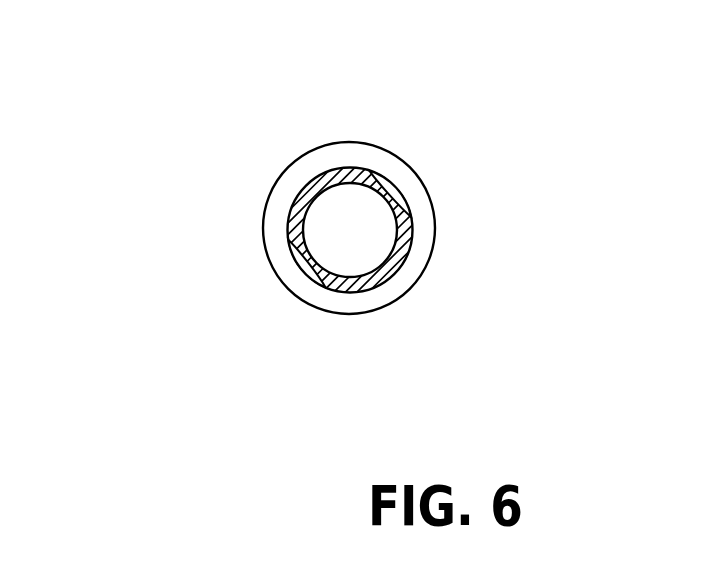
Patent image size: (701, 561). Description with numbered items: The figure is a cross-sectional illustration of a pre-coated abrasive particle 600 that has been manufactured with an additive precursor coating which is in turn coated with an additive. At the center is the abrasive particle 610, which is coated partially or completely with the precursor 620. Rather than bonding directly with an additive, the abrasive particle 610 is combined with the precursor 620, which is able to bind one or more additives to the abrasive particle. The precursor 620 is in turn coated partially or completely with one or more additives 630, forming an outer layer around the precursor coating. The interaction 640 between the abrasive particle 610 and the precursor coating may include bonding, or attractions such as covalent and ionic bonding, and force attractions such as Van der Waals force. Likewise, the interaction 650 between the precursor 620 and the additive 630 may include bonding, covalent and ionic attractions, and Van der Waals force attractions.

The pre-coated abrasive particle 600 is at (175, 102).
The abrasive particle 610 is at (343, 205).
The precursor 620 is at (403, 197).
The additive 630 is at (418, 255).
The interaction 640 is at (327, 283).
The interaction 650 is at (372, 292).